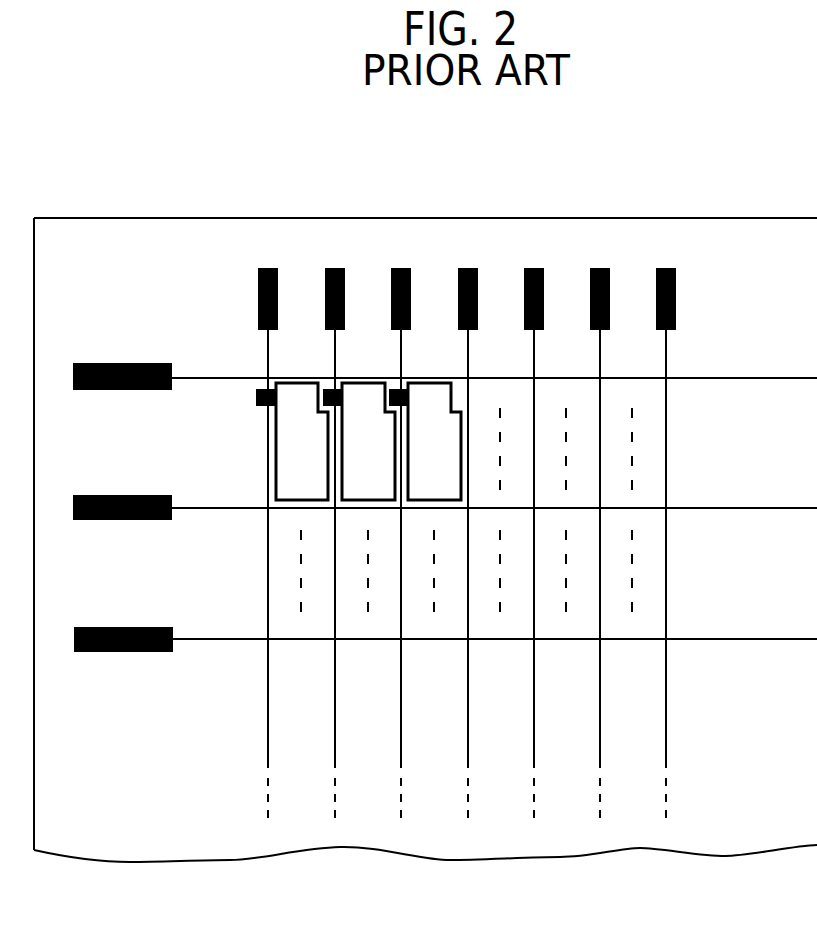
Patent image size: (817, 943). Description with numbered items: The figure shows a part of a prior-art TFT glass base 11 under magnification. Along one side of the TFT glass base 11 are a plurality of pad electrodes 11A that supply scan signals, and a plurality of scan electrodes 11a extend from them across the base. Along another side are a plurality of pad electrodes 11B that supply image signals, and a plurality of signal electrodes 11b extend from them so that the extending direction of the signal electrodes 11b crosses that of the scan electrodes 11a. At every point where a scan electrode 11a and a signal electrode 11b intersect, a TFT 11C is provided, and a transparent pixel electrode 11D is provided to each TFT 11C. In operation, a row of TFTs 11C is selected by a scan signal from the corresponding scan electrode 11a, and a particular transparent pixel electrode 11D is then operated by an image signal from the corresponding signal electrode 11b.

The TFT glass base 11 is at (490, 133).
The pad electrodes 11A is at (118, 390).
The scan electrodes 11a is at (771, 378).
The pad electrodes 11B is at (278, 292).
The signal electrodes 11b is at (666, 722).
The TFTs 11C is at (256, 402).
The transparent pixel electrode 11D is at (322, 456).